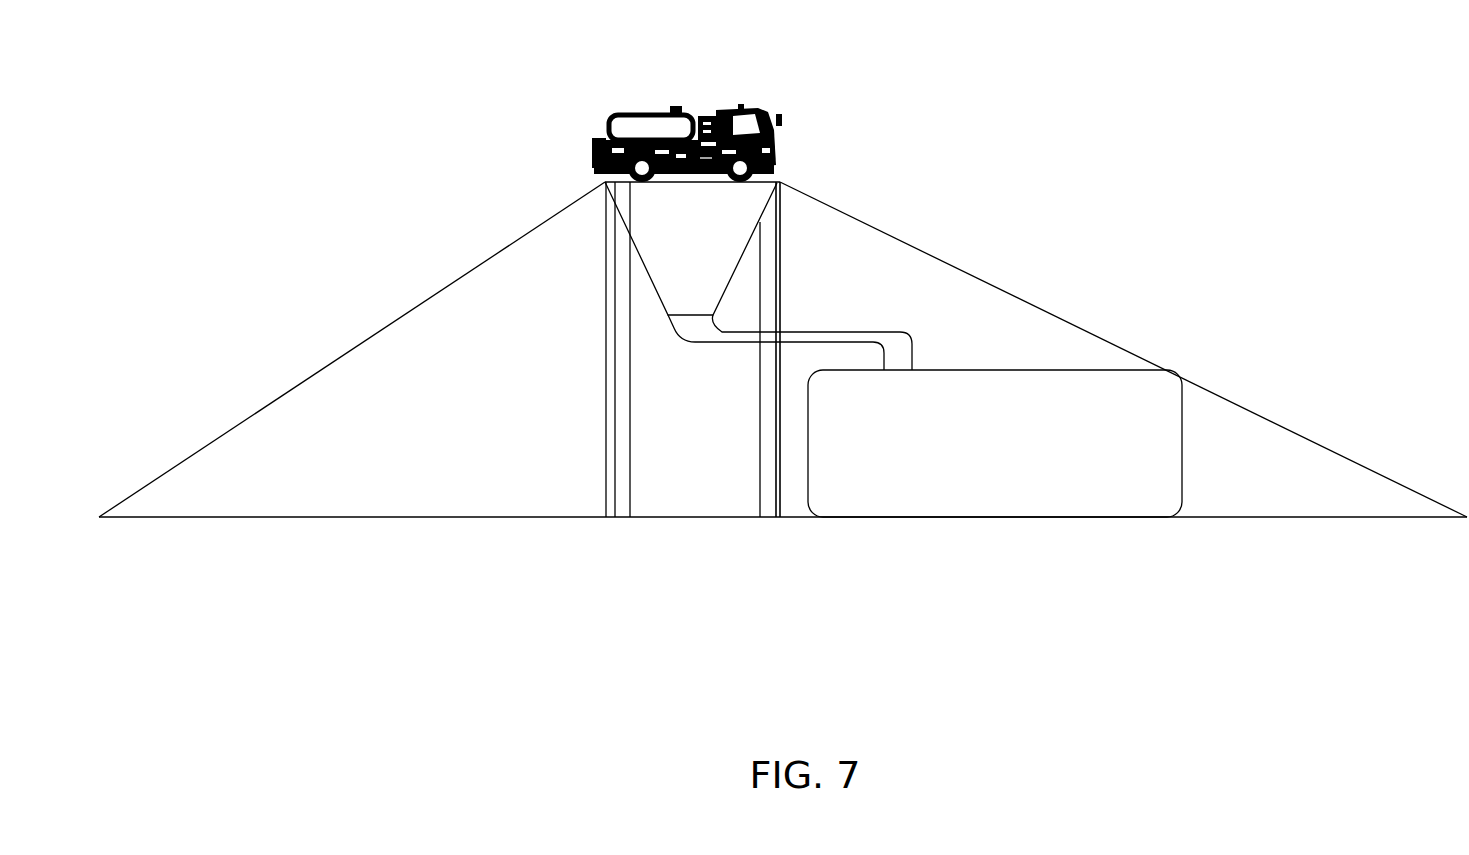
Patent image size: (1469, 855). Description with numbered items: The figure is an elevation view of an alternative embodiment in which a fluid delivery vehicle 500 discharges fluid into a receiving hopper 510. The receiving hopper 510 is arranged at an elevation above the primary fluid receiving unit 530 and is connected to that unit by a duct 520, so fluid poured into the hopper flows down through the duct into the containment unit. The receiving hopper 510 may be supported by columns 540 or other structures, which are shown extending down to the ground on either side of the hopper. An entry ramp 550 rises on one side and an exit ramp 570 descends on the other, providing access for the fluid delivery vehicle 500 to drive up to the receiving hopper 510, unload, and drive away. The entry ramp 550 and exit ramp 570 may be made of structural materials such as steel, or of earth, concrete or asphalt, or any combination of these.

The fluid delivery vehicle 500 is at (626, 90).
The receiving hopper 510 is at (658, 232).
The duct 520 is at (801, 332).
The primary fluid receiving unit 530 is at (1138, 388).
The columns 540 is at (620, 517).
The entry ramp 550 is at (223, 458).
The exit ramp 570 is at (1034, 328).